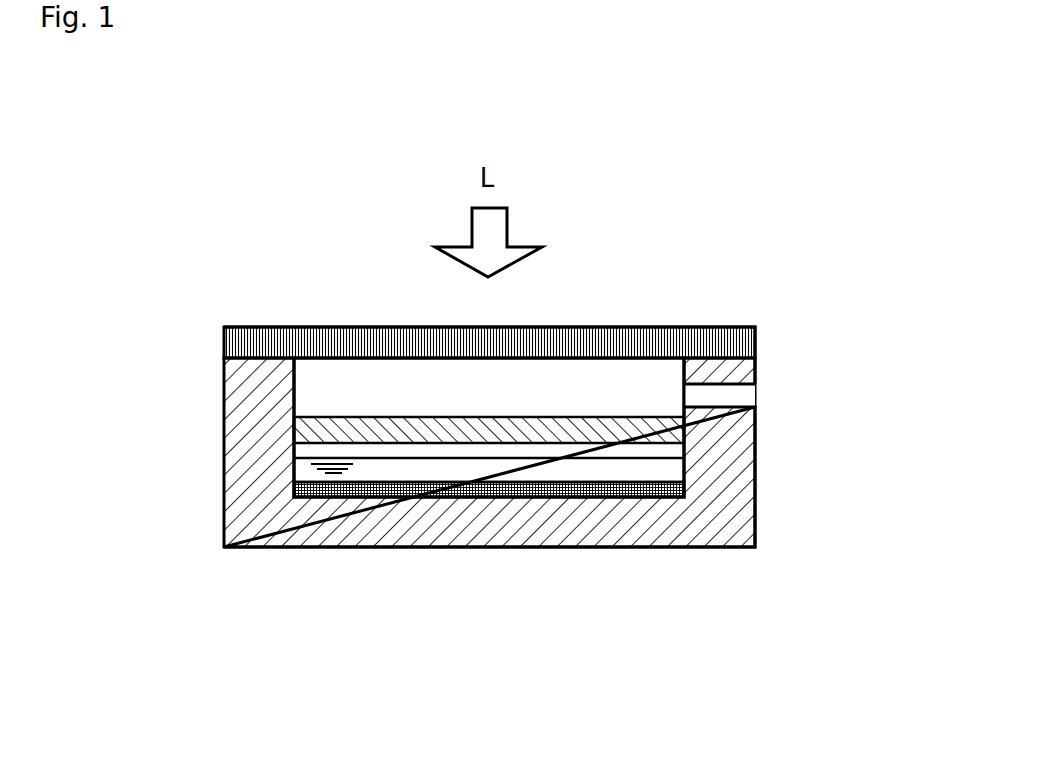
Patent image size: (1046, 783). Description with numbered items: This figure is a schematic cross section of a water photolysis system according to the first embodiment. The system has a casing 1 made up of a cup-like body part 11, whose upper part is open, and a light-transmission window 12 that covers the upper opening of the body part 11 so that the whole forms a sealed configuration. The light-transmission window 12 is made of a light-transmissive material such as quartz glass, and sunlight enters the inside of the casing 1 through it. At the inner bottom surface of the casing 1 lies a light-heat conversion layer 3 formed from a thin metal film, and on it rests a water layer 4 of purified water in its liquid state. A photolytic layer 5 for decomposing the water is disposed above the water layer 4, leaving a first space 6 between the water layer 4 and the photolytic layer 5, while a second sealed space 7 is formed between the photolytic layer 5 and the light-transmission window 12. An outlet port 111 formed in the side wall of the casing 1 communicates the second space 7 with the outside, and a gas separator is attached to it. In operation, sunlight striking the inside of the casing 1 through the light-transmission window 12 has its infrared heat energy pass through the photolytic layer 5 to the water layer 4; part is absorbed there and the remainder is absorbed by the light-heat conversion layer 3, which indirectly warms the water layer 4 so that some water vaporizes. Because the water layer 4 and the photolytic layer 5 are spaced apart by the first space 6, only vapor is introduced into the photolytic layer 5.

The casing 1 is at (94, 245).
The body part 11 is at (238, 374).
The light-transmission window 12 is at (240, 338).
The outlet port 111 is at (740, 400).
The light-heat conversion layer 3 is at (638, 497).
The water layer 4 is at (668, 474).
The photolytic layer 5 is at (363, 430).
The first space 6 is at (310, 452).
The second space 7 is at (530, 385).